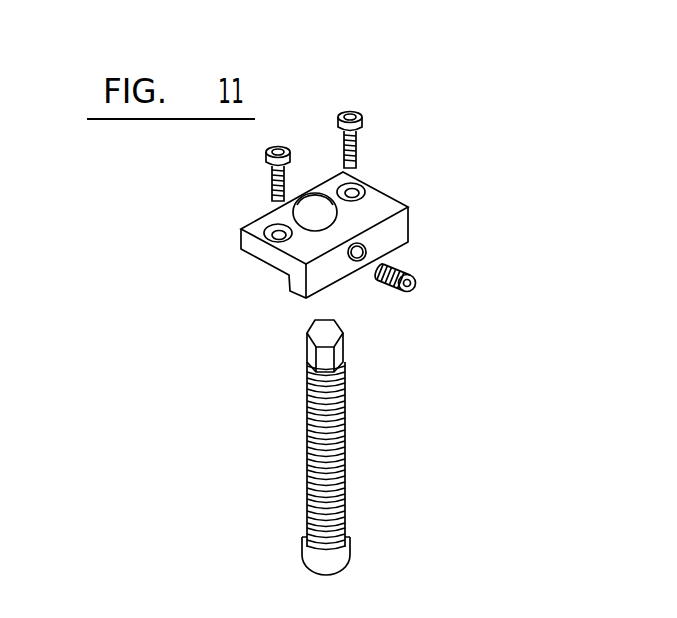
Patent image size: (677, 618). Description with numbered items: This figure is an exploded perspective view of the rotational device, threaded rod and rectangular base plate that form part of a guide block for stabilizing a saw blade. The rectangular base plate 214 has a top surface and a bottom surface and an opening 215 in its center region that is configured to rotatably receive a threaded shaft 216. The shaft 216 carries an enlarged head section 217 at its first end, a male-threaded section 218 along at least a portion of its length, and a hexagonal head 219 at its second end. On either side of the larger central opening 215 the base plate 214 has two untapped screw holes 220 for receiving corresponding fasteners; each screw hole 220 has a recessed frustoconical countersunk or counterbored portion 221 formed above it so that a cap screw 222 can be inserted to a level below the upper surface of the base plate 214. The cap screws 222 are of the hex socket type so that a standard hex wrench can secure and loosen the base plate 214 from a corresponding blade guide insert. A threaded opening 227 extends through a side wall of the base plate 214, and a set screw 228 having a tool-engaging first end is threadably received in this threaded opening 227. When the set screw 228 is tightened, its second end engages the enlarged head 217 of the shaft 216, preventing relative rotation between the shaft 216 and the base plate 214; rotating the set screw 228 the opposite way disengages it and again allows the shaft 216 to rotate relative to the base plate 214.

The base plate 214 is at (372, 203).
The opening 215 is at (313, 224).
The threaded shaft 216 is at (363, 440).
The enlarged head section 217 is at (345, 558).
The male-threaded section 218 is at (305, 400).
The hexagonal head 219 is at (325, 330).
The untapped screw holes 220 is at (277, 235).
The countersunk or counterbored portion 221 is at (365, 178).
The cap screws 222 is at (277, 140).
The threaded opening 227 is at (373, 250).
The set screw 228 is at (428, 268).